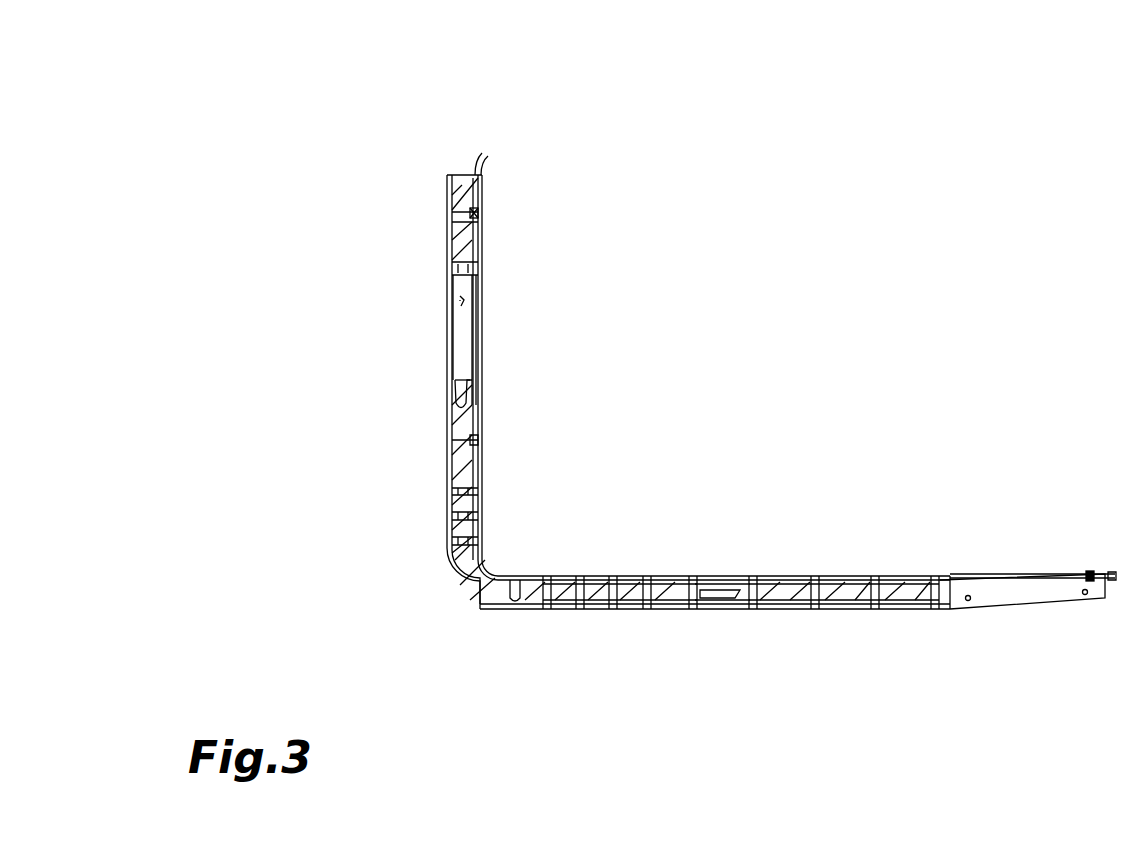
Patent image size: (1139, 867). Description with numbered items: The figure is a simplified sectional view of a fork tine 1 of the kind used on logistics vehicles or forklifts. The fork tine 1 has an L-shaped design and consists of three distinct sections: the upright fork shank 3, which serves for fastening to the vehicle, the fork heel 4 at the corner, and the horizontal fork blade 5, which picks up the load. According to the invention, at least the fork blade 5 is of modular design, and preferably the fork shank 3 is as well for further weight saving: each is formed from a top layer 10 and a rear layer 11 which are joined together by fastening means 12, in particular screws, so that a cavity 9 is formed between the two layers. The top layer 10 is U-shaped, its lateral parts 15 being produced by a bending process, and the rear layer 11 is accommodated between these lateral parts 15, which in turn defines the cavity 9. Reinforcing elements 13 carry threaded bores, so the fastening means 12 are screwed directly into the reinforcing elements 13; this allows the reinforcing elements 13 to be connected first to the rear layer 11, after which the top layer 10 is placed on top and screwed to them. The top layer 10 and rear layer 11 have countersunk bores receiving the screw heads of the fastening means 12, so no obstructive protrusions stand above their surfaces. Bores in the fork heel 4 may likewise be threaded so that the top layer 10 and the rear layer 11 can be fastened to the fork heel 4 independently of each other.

The fork tine 1 is at (378, 197).
The fork shank 3 is at (542, 288).
The fork heel 4 is at (462, 580).
The fork blade 5 is at (848, 564).
The cavity 9 is at (463, 346).
The top layer 10 is at (482, 342).
The rear layer 11 is at (450, 330).
The fastening means 12 is at (477, 262).
The reinforcing elements 13 is at (447, 176).
The lateral parts 15 is at (462, 305).